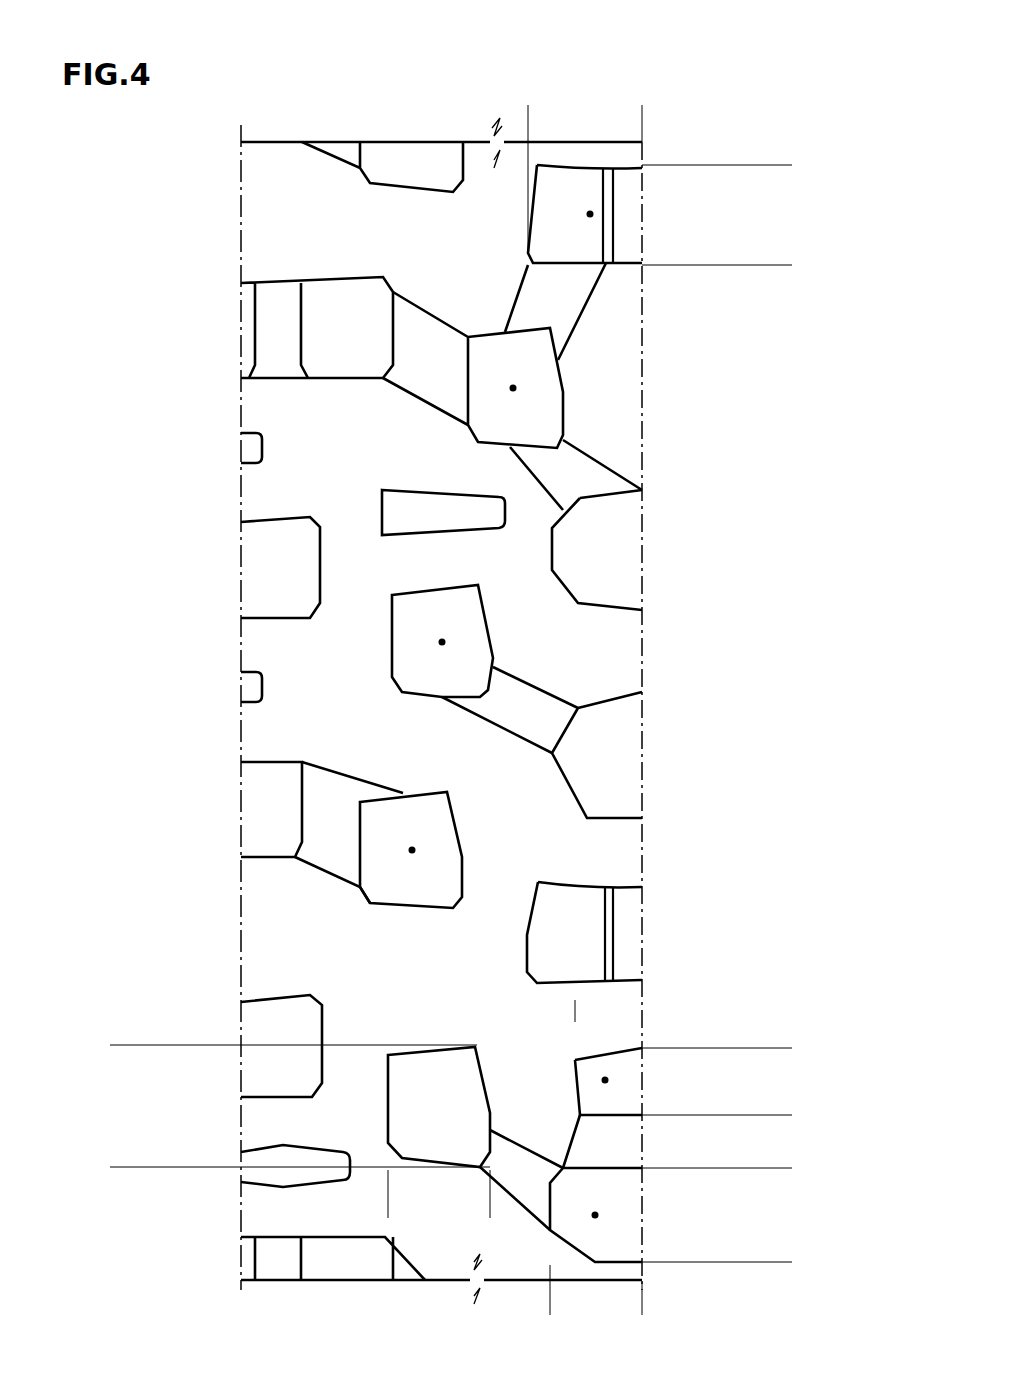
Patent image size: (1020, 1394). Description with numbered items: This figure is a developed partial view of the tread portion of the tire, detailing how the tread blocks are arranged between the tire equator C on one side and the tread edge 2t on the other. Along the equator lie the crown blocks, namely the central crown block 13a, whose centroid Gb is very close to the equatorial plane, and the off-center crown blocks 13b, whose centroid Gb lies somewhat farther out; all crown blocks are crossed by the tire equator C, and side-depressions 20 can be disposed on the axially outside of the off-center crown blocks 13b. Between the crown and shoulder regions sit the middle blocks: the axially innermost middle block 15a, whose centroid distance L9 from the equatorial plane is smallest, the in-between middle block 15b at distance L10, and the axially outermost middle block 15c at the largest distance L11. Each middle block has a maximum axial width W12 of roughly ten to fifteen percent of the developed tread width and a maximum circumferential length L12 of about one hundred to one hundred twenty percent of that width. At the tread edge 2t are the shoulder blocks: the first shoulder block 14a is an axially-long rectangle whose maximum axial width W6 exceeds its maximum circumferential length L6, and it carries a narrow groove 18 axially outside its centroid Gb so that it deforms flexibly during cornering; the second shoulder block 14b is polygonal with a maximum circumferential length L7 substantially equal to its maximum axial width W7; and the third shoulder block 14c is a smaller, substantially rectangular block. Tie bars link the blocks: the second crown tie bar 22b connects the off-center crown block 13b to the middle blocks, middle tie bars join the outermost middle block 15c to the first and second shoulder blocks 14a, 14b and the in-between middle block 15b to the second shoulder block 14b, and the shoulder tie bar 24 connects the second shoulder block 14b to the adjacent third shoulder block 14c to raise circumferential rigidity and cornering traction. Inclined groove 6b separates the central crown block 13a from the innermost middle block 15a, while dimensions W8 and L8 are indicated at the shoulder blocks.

The tire equator C is at (241, 695).
The tread edge 2t is at (642, 158).
The second crown tie bar 22b is at (412, 330).
The first shoulder block 14a is at (617, 245).
The narrow groove 18 is at (611, 218).
The off-center crown block 13b is at (336, 315).
The axially outermost middle block 15c is at (541, 412).
The side-depression 20 is at (408, 513).
The second shoulder block 14b is at (619, 530).
The in-between middle block 15b is at (428, 605).
The central crown block 13a is at (280, 783).
The axially innermost middle block 15a is at (390, 825).
The inclined groove 6b is at (407, 857).
The third shoulder block 14c is at (619, 1103).
The shoulder tie bar 24 is at (619, 1147).
The centroid Gb is at (592, 212).
The maximum axial width of first shoulder block W6 is at (528, 111).
The maximum circumferential length of first shoulder block L6 is at (783, 165).
The distance from equatorial plane to centroid of outermost middle block L11 is at (510, 388).
The distance from equatorial plane to centroid of in-between middle block L10 is at (440, 642).
The distance from equatorial plane to centroid of innermost middle block L9 is at (410, 850).
The width W8 is at (672, 1013).
The maximum circumferential length of middle block L12 is at (117, 1045).
The length L8 is at (783, 1048).
The maximum circumferential length of second shoulder block L7 is at (783, 1168).
The maximum axial width of middle block W12 is at (513, 1208).
The maximum axial width of second shoulder block W7 is at (550, 1308).